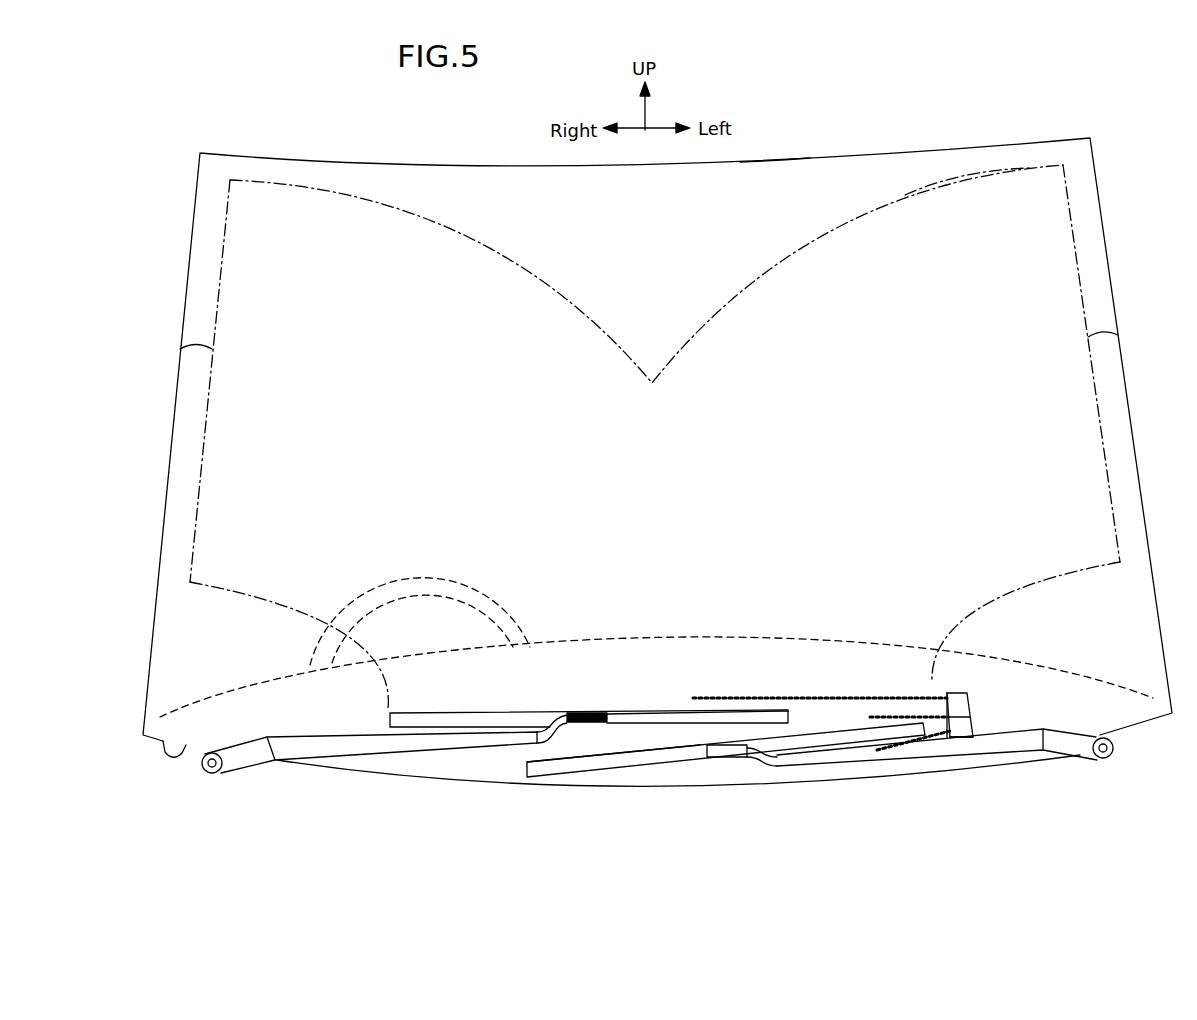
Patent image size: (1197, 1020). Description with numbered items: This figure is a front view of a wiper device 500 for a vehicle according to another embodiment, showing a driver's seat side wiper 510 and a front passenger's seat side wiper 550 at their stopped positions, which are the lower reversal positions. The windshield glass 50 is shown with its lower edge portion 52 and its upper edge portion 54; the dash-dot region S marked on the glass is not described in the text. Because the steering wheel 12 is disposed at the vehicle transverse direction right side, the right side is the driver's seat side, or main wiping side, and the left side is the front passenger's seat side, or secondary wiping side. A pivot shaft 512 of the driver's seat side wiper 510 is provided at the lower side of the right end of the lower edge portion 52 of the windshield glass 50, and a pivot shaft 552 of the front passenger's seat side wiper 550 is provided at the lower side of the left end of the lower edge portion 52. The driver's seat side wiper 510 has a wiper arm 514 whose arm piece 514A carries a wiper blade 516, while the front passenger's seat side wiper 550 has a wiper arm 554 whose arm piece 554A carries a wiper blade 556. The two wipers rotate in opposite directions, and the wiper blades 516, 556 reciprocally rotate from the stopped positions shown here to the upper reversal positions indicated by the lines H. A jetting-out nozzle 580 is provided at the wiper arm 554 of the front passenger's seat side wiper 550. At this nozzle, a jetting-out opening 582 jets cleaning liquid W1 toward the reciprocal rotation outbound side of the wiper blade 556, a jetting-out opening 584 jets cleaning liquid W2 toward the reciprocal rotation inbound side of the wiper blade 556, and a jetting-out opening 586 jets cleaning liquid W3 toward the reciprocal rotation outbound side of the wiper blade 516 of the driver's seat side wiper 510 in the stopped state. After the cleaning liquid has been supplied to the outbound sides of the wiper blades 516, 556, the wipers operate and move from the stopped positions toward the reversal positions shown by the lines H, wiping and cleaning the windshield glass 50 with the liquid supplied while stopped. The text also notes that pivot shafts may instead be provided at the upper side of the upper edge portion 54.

The steering wheel 12 is at (444, 577).
The windshield glass 50 is at (1038, 150).
The lower edge portion 52 is at (183, 748).
The upper edge portion 54 is at (788, 156).
The wiper device for a vehicle 500 is at (705, 605).
The driver's seat side wiper 510 is at (552, 712).
The pivot shaft 512 is at (213, 774).
The wiper arm 514 is at (368, 749).
The arm piece 514A is at (575, 728).
The wiper blade 516 is at (628, 718).
The front passenger's seat side wiper 550 is at (826, 733).
The pivot shaft 552 is at (1104, 760).
The wiper arm 554 is at (1017, 753).
The arm piece 554A is at (731, 748).
The wiper blade 556 is at (665, 759).
The jetting-out nozzle 580 is at (962, 695).
The jetting-out opening 582 is at (962, 703).
The jetting-out opening 584 is at (973, 728).
The jetting-out opening 586 is at (948, 692).
The line H is at (180, 349).
The sensing area S is at (926, 188).
The cleaning liquid W1 is at (883, 716).
The cleaning liquid W2 is at (881, 752).
The cleaning liquid W3 is at (748, 696).